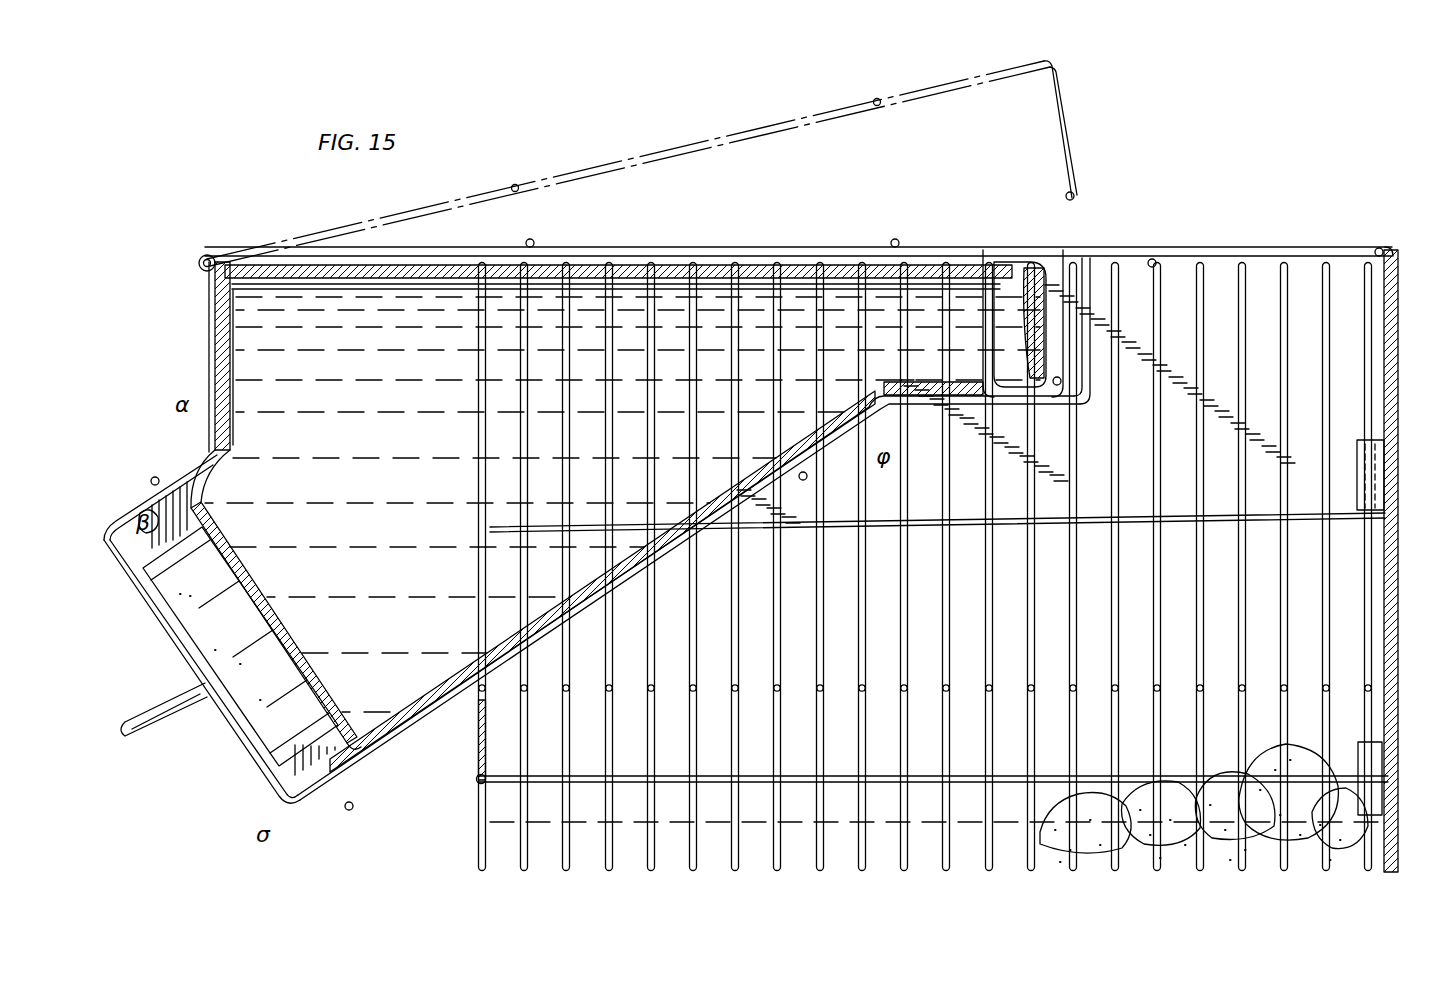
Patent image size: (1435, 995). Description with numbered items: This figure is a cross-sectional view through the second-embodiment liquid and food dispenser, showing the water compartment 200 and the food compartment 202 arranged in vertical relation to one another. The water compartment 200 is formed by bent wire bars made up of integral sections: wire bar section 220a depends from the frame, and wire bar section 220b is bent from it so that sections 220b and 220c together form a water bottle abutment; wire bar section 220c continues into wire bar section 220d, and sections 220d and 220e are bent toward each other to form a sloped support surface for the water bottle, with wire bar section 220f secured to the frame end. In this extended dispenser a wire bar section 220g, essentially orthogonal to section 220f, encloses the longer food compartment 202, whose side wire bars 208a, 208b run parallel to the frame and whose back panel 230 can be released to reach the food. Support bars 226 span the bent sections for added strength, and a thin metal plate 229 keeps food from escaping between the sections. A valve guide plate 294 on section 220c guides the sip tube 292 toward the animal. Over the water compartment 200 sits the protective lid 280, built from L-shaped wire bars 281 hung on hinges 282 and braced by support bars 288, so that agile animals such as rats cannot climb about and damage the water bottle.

The liquid compartment 200 is at (352, 450).
The food compartment 202 is at (1347, 625).
The side wire bar 208a is at (972, 786).
The side wire bar 208b is at (1300, 512).
The wire bar section 220a is at (211, 336).
The wire bar section 220b is at (108, 520).
The wire bar section 220c is at (176, 616).
The wire bar section 220d is at (420, 748).
The wire bar section 220e is at (985, 382).
The wire bar section 220f is at (1088, 327).
The wire bar section 220g is at (1262, 250).
The support bars 226 is at (157, 476).
The thin metal plate 229 is at (474, 782).
The back panel 230 is at (1402, 256).
The protective lid 280 is at (672, 163).
The L-shaped wire bars 281 is at (1056, 66).
The hinges 282 is at (198, 276).
The support bars 288 is at (517, 182).
The sip tube 292 is at (163, 740).
The valve guide plate 294 is at (262, 752).